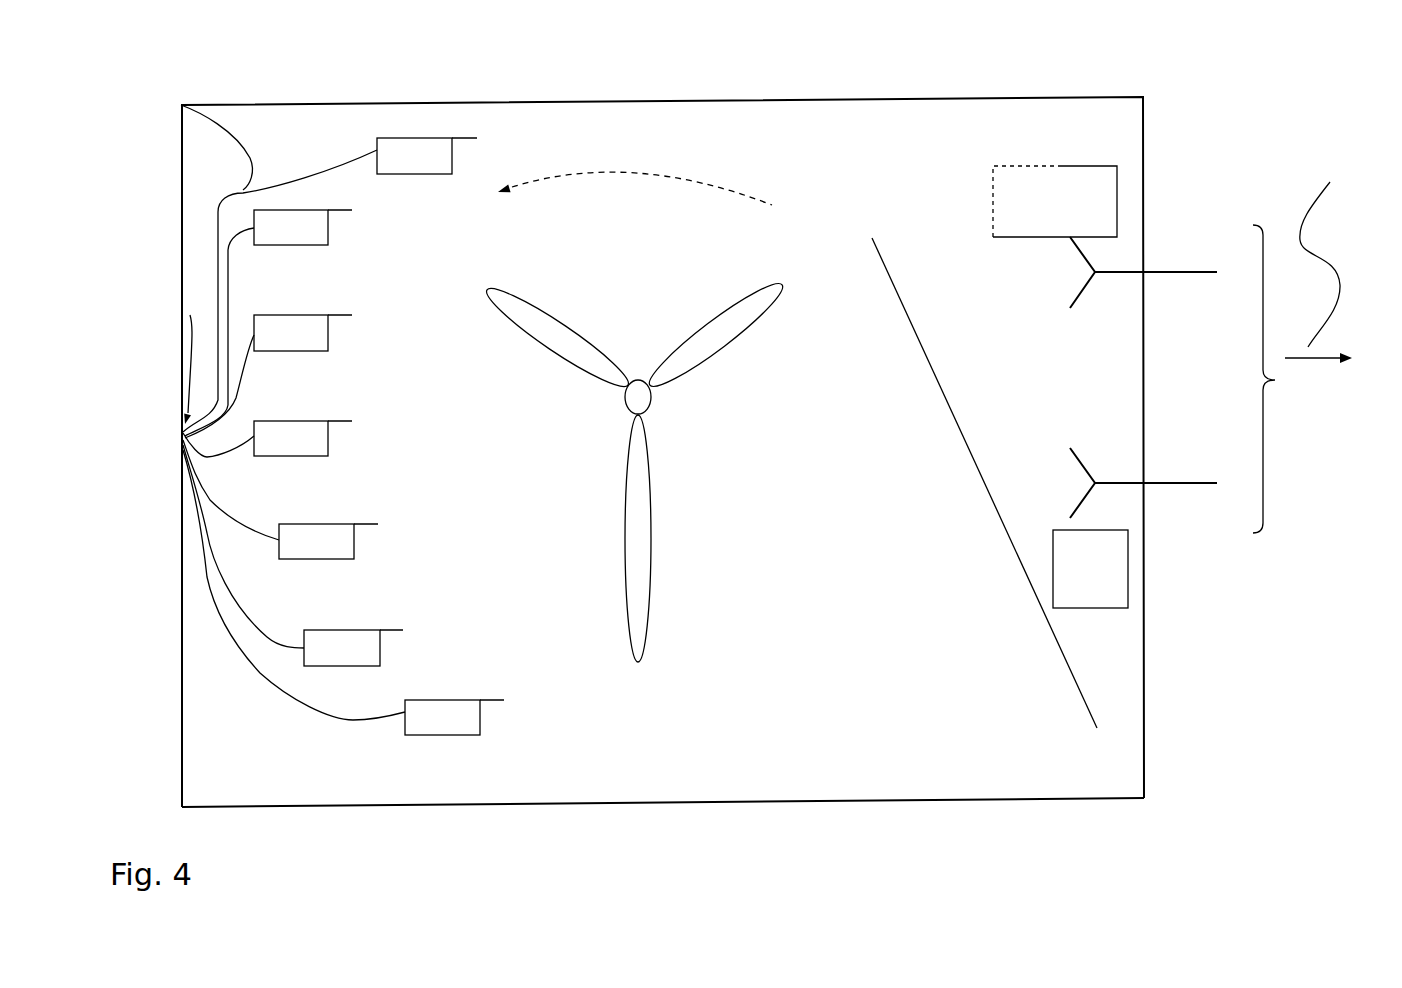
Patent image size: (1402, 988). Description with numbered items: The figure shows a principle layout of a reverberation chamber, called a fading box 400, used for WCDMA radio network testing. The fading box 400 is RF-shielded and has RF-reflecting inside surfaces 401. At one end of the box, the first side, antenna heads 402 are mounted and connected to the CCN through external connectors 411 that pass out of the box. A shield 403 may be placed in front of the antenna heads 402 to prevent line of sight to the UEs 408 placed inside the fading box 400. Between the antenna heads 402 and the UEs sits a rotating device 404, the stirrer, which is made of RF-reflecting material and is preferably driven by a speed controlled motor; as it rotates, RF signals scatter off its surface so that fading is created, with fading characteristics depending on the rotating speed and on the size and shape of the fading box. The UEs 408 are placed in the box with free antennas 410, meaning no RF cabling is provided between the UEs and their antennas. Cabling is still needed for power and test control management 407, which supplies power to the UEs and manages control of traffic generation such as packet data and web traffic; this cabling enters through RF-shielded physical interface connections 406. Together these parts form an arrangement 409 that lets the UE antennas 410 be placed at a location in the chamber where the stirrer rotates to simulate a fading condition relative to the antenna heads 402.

The fading box 400 is at (498, 807).
The RF-reflecting inside surfaces 401 is at (634, 801).
The antenna heads 402 is at (1105, 387).
The shield 403 is at (1036, 613).
The rotating device 404 is at (634, 417).
The RF-shielded physical interface connections 406 is at (181, 105).
The power and test control management 407 is at (132, 497).
The UEs 408 is at (367, 436).
The arrangement 409 is at (190, 315).
The antennas 410 is at (397, 487).
The external connectors 411 is at (1295, 345).